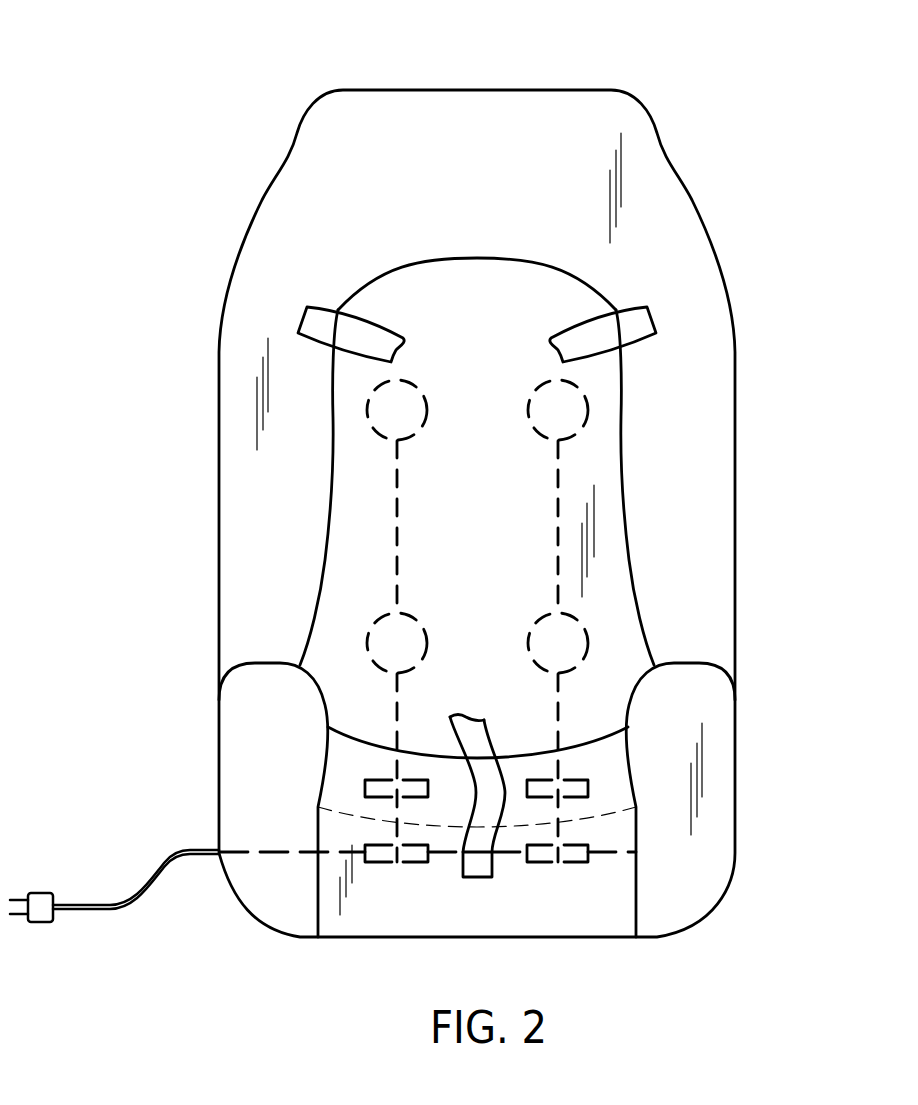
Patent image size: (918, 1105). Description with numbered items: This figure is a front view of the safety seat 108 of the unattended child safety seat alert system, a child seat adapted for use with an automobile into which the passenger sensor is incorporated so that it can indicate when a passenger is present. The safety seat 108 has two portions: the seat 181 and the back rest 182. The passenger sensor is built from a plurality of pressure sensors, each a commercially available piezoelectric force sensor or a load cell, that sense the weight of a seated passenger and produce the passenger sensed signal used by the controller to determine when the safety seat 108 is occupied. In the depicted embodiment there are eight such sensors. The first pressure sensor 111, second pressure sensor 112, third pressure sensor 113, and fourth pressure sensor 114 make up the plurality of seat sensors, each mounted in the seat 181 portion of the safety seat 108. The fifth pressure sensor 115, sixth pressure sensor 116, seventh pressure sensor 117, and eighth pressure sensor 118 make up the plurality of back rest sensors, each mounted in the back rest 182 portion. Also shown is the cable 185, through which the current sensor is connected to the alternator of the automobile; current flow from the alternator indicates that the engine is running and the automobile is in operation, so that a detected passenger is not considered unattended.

The safety seat 108 is at (148, 101).
The seat 181 is at (652, 202).
The back rest 182 is at (598, 778).
The cable 185 is at (105, 910).
The first pressure sensor 111 is at (373, 778).
The second pressure sensor 112 is at (407, 862).
The third pressure sensor 113 is at (572, 777).
The fourth pressure sensor 114 is at (567, 862).
The fifth pressure sensor 115 is at (422, 394).
The sixth pressure sensor 116 is at (418, 622).
The seventh pressure sensor 117 is at (535, 428).
The eighth pressure sensor 118 is at (530, 631).